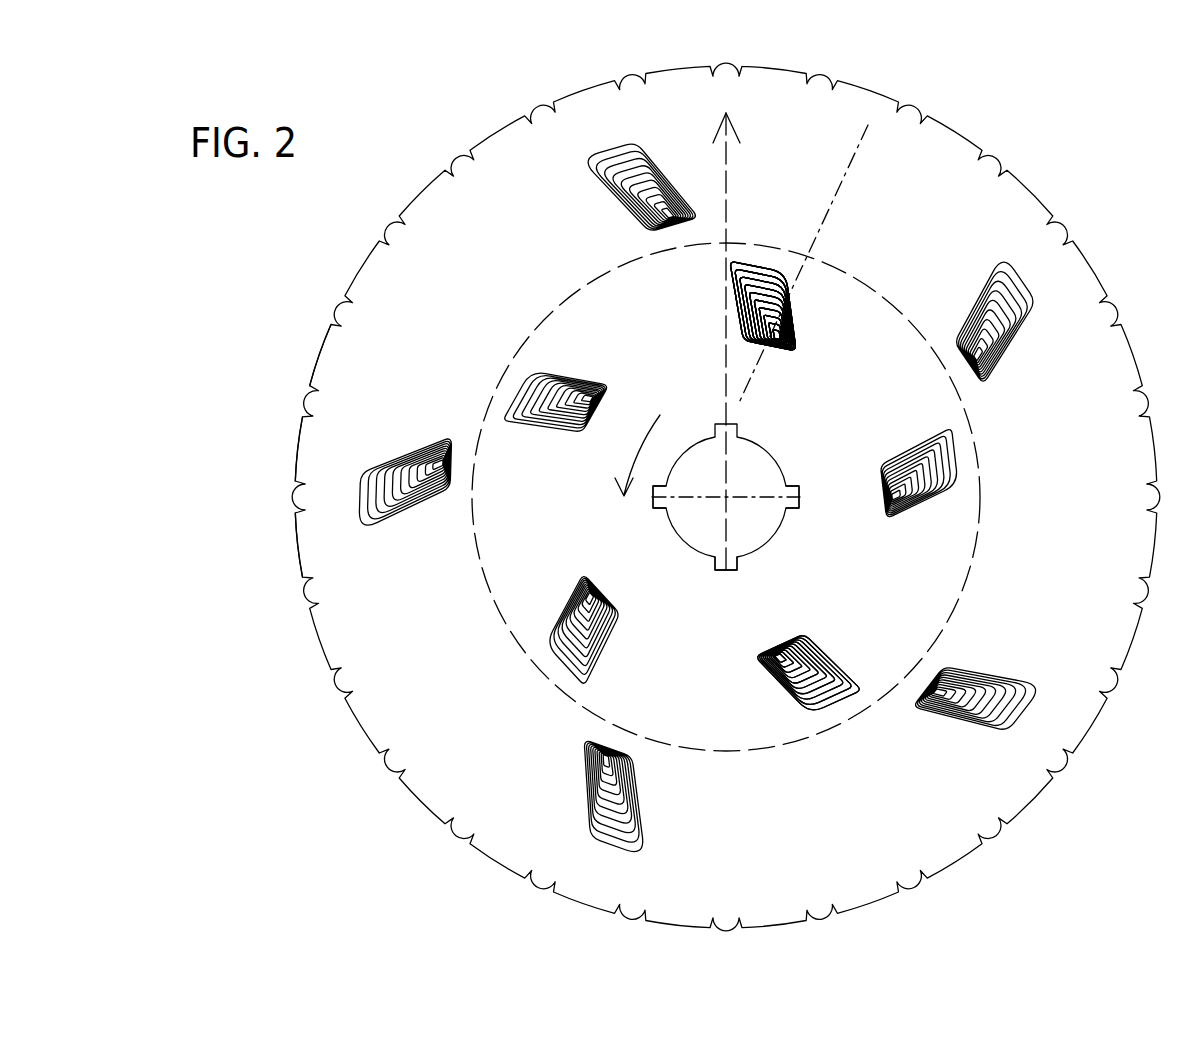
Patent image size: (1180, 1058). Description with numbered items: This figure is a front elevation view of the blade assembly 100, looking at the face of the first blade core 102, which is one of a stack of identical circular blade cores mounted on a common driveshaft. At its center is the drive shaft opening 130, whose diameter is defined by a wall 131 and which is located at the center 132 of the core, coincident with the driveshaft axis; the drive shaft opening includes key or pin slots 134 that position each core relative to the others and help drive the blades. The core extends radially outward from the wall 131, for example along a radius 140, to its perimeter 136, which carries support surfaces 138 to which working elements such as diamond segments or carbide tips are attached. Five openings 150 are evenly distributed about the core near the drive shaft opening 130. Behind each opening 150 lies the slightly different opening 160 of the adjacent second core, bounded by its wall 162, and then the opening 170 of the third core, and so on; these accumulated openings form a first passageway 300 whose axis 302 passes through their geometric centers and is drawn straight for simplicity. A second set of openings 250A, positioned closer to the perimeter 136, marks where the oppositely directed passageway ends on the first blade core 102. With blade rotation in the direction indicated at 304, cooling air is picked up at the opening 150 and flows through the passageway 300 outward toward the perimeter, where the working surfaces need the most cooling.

The blade assembly 100 is at (672, 495).
The first blade core 102 is at (503, 160).
The drive shaft opening 130 is at (708, 520).
The wall 131 is at (680, 537).
The center 132 is at (738, 500).
The key or pin slot 134 is at (798, 493).
The perimeter 136 is at (290, 453).
The support surfaces 138 is at (313, 355).
The radius 140 is at (718, 172).
The opening 150 is at (778, 358).
The opening 160 is at (787, 343).
The wall 162 is at (757, 310).
The opening 170 is at (785, 332).
The opening 250A is at (600, 155).
The first passageway 300 is at (755, 283).
The axis 302 is at (855, 172).
The blade rotation 304 is at (628, 463).